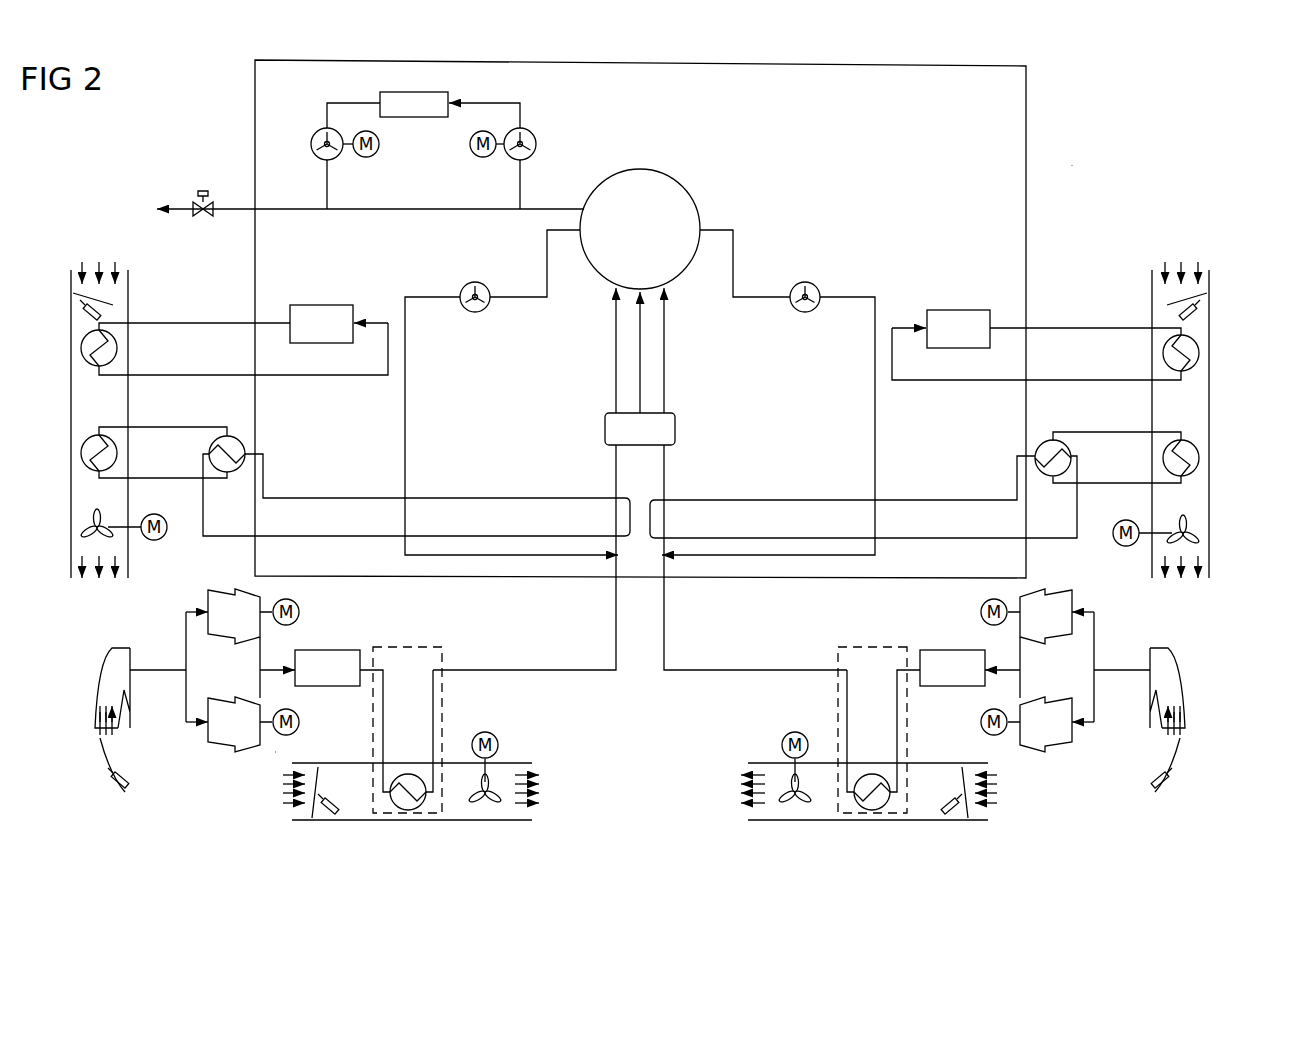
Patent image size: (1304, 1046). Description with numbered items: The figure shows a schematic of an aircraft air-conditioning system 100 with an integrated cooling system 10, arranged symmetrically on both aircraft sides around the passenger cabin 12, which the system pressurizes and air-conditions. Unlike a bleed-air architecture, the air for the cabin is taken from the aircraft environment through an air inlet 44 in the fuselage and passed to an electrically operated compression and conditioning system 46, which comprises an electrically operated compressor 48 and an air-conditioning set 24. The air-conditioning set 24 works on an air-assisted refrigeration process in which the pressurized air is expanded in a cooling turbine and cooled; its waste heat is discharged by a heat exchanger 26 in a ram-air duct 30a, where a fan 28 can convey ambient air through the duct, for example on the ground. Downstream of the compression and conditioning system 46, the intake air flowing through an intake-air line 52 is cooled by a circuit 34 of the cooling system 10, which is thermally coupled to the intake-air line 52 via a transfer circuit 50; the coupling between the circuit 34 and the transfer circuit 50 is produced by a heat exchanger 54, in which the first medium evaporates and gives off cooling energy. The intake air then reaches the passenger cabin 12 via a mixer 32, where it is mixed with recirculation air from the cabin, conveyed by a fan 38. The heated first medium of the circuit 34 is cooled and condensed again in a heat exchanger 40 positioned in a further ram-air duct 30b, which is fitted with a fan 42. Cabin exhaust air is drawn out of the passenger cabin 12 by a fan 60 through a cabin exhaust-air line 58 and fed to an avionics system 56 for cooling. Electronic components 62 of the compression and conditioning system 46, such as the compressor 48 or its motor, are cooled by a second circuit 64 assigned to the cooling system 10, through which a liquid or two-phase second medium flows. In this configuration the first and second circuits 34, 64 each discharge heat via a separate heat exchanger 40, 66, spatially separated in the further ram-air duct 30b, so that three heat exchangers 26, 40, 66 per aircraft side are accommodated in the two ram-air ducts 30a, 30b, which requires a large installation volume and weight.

The aircraft air-conditioning system 100 is at (1085, 160).
The cooling system 10 is at (183, 305).
The passenger cabin 12 is at (641, 167).
The air-conditioning set 24 is at (640, 730).
The heat exchanger 26 is at (410, 812).
The fan 28 is at (484, 806).
The ram-air duct 30a is at (356, 822).
The further ram-air duct 30b is at (90, 492).
The mixer 32 is at (677, 428).
The circuit 34 is at (640, 455).
The fan 38 is at (478, 282).
The heat exchanger 40 is at (80, 456).
The fan 42 is at (82, 538).
The air inlet 44 is at (122, 646).
The compression and conditioning system 46 is at (272, 752).
The compressor 48 is at (188, 634).
The transfer circuit 50 is at (640, 496).
The intake-air line 52 is at (574, 667).
The heat exchanger 54 is at (234, 436).
The avionics system 56 is at (420, 119).
The cabin exhaust-air line 58 is at (553, 207).
The fan 60 is at (538, 130).
The electronic component 62 is at (320, 304).
The second circuit 64 is at (640, 351).
The heat exchanger 66 is at (80, 350).